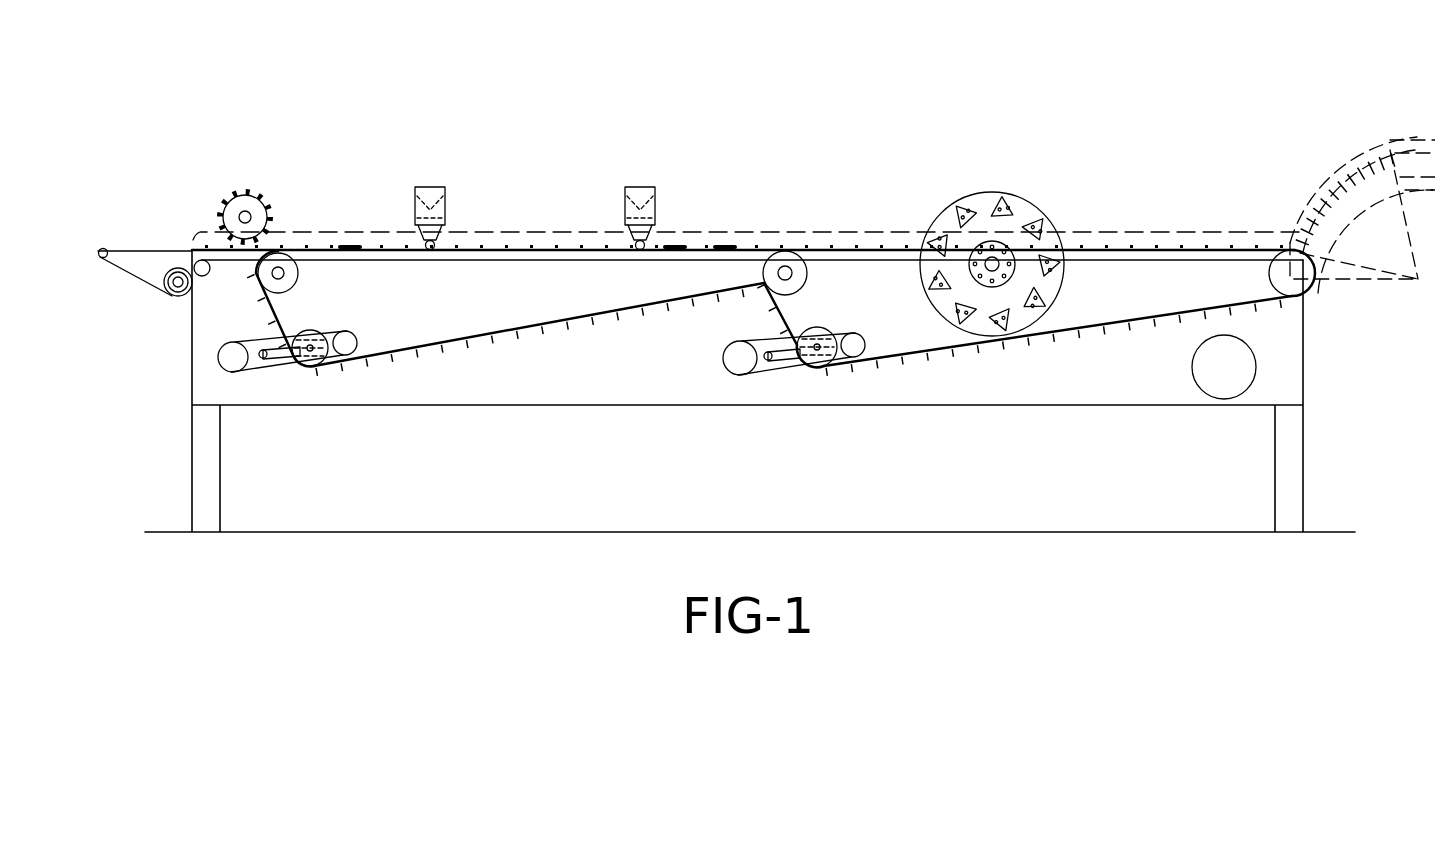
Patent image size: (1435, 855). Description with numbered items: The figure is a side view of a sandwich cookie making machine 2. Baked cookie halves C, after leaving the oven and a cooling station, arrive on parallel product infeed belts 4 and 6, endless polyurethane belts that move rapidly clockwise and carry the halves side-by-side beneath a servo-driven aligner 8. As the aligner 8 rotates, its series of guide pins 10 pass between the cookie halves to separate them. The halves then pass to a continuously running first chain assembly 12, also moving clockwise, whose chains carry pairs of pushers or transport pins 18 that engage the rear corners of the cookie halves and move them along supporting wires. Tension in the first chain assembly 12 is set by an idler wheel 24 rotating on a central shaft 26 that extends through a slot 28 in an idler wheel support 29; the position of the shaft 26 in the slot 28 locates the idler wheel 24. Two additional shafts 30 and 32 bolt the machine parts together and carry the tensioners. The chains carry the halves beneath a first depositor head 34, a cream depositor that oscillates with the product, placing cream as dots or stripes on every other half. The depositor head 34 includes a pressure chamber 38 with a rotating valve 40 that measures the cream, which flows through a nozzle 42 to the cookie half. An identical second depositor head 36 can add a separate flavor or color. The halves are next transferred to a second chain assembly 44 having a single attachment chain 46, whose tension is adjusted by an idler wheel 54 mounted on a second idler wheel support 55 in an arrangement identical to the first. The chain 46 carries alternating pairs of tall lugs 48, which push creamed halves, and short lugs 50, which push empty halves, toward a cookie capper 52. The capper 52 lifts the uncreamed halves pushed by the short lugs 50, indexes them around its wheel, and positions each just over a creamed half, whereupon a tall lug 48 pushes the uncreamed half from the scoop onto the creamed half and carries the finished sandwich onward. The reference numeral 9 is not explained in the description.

The sandwich cookie making machine 2 is at (541, 125).
The product infeed belt 4 is at (102, 248).
The product infeed belt 6 is at (150, 249).
The servo-driven aligner 8 is at (232, 212).
The guide pins 10 is at (263, 192).
The guide cover 9 is at (328, 232).
The first chain assembly 12 is at (295, 245).
The transport pins 18 is at (555, 250).
The cookie halves C is at (349, 250).
The first depositor head 34 is at (420, 186).
The pressure chamber 38 is at (435, 190).
The nozzle 42 is at (415, 243).
The rotating valve 40 is at (445, 234).
The second depositor head 36 is at (633, 186).
The tall lugs 48 is at (815, 250).
The short lugs 50 is at (900, 250).
The attachment chain 46 is at (935, 355).
The cookie capper 52 is at (988, 183).
The second chain assembly 44 is at (1168, 250).
The idler wheel 24 is at (310, 346).
The central shaft 26 is at (318, 343).
The shaft 32 is at (350, 340).
The shaft 30 is at (233, 360).
The idler wheel support 29 is at (267, 382).
The slot 28 is at (278, 368).
The idler wheel 54 is at (822, 335).
The second idler wheel support 55 is at (777, 385).